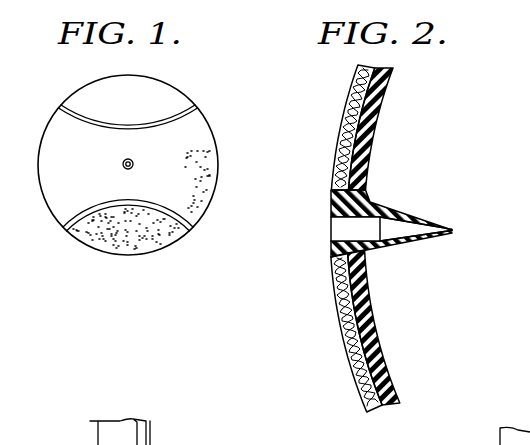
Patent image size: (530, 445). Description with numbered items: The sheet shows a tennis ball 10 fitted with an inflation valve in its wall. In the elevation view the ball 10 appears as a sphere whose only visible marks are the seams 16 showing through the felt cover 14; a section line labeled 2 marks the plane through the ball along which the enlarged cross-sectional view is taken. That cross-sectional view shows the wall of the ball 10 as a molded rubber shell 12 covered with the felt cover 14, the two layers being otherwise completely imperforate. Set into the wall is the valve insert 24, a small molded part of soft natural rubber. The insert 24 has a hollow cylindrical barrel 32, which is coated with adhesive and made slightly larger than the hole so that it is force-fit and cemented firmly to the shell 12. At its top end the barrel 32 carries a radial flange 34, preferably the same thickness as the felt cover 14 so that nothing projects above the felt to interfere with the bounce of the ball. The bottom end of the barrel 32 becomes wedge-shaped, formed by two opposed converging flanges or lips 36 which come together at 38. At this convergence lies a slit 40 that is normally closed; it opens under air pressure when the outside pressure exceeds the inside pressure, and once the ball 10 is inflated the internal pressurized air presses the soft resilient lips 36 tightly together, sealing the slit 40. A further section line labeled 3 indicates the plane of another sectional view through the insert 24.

In FIG. 1, the tennis ball 10 is at (200, 86).
In FIG. 2, the tennis ball 10 is at (369, 238).
In FIG. 2, the molded rubber shell 12 is at (368, 116).
In FIG. 1, the felt cover 14 is at (58, 173).
In FIG. 2, the felt cover 14 is at (348, 127).
In FIG. 1, the seams 16 is at (86, 117).
In FIG. 1, the section plane 2- 2 is at (134, 141).
In FIG. 2, the valve insert 24 is at (329, 243).
In FIG. 2, the hollow cylindrical barrel 32 is at (373, 207).
In FIG. 2, the radial flange 34 is at (336, 203).
In FIG. 2, the converging flanges or lips 36 is at (417, 215).
In FIG. 2, the convergence of the lips 38 is at (458, 220).
In FIG. 2, the slit 40 is at (458, 230).
In FIG. 2, the section plane 3- 3 is at (452, 175).